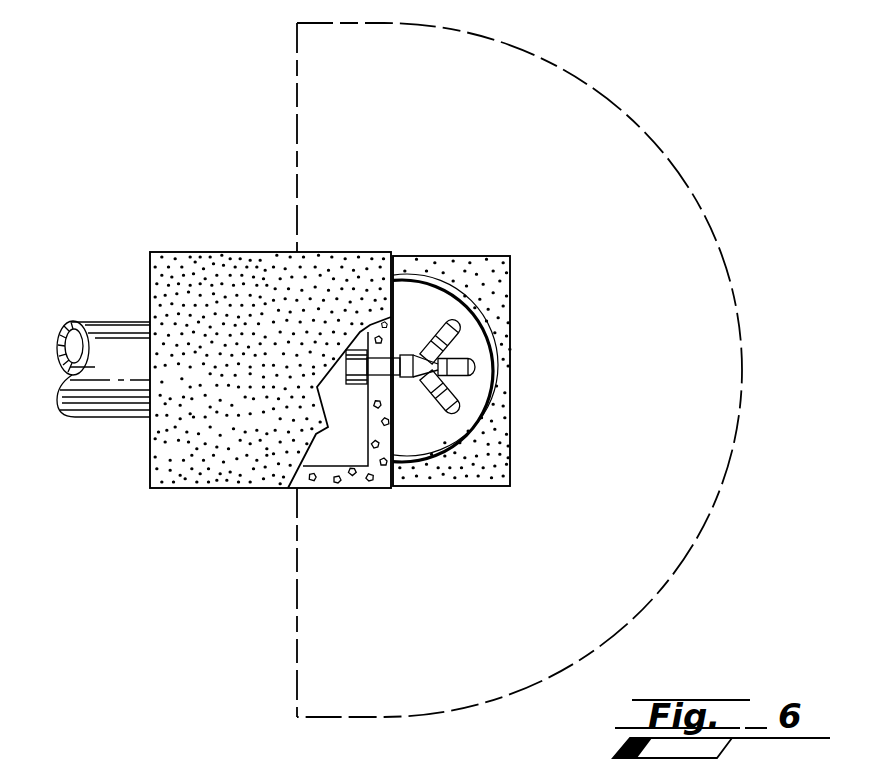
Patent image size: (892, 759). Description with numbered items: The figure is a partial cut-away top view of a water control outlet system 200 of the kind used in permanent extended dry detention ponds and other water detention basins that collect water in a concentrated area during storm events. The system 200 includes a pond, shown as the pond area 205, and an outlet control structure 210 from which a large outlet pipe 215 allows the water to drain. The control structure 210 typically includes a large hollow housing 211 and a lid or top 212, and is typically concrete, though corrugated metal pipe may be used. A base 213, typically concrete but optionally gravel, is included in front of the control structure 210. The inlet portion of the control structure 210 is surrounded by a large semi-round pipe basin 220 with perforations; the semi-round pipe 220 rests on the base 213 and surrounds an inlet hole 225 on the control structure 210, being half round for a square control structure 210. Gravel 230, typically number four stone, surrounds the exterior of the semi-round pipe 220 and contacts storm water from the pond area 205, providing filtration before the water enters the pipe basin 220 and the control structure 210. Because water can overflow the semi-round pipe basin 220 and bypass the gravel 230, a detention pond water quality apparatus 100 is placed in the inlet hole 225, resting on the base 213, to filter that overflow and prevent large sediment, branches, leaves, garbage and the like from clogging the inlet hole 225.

The detention pond water quality apparatus 100 is at (424, 378).
The water control outlet system 200 is at (632, 62).
The pond area 205 is at (700, 367).
The outlet control structure 210 is at (239, 230).
The hollow housing 211 is at (324, 488).
The lid 212 is at (190, 488).
The base 213 is at (396, 356).
The outlet pipe 215 is at (110, 320).
The semi-round pipe basin 220 is at (496, 350).
The inlet hole 225 is at (397, 356).
The gravel 230 is at (498, 440).